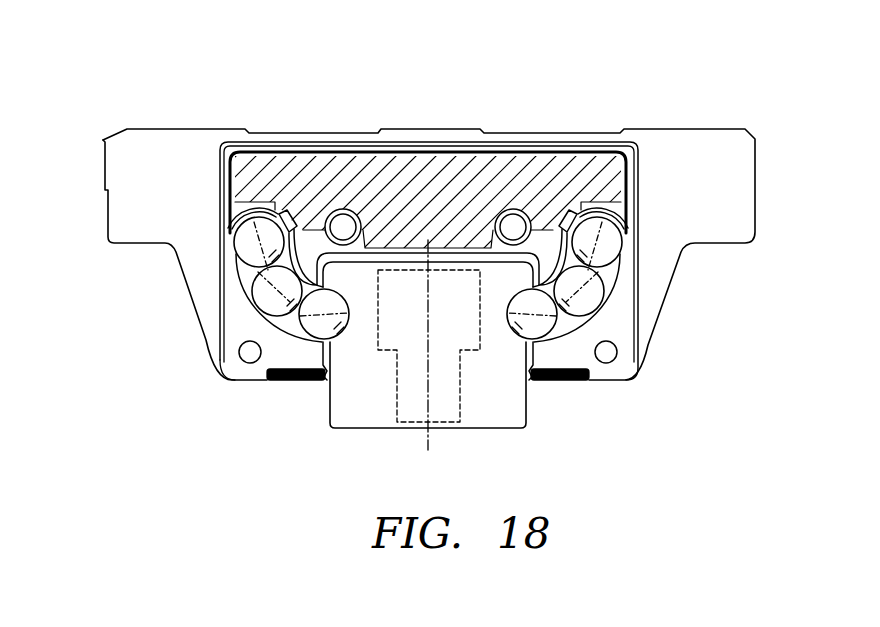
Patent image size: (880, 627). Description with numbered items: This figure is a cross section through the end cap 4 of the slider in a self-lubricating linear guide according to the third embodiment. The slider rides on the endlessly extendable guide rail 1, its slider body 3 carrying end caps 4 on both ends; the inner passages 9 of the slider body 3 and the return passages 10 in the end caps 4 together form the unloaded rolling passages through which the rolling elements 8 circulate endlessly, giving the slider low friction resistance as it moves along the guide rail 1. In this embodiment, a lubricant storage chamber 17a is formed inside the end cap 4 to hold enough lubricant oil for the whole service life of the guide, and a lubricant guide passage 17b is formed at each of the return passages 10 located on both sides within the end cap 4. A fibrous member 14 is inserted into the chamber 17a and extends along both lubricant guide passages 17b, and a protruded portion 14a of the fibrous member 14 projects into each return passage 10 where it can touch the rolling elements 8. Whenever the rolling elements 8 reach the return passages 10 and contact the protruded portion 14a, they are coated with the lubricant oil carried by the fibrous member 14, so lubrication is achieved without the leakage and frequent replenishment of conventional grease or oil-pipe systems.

The guide rail 1 is at (365, 408).
The slider body 3 is at (208, 288).
The end cap 4 is at (250, 323).
The rolling elements 8 is at (262, 240).
The inner passages 9 is at (232, 212).
The return passages 10 is at (280, 305).
The fibrous member 14 is at (420, 190).
The protruded portion of the fibrous member 14a is at (256, 228).
The lubricant storage chamber 17a is at (478, 153).
The lubricant guide passage 17b is at (316, 222).